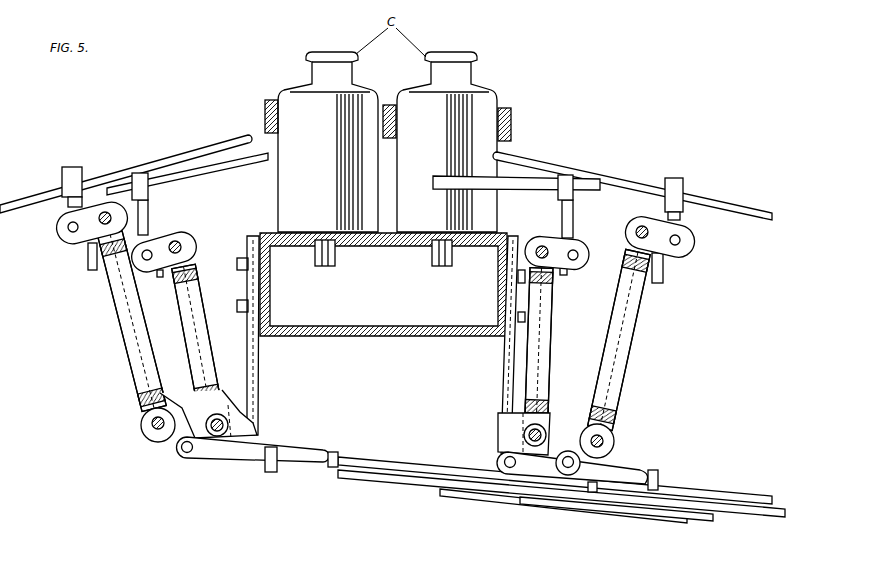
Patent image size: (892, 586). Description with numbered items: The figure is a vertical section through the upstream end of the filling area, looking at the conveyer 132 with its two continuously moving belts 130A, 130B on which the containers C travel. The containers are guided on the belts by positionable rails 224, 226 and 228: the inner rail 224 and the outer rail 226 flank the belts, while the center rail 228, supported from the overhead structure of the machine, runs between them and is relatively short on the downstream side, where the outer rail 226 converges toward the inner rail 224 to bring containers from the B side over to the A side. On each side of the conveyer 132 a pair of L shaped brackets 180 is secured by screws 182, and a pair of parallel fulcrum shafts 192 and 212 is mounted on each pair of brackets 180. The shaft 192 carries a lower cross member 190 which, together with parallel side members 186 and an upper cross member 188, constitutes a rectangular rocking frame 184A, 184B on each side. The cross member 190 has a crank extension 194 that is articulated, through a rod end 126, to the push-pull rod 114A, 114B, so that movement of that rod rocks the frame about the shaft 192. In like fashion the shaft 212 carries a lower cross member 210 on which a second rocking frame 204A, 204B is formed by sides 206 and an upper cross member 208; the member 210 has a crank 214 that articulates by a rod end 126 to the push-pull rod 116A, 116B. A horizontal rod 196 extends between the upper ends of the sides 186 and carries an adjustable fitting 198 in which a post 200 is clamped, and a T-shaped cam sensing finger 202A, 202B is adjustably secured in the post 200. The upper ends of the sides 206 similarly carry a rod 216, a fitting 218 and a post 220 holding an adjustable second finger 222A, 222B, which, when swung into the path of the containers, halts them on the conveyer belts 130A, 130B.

The push-pull rod 114A is at (557, 480).
The push-pull rod 114B is at (632, 521).
The push-pull rod 116A is at (757, 516).
The push-pull rod 116B is at (698, 522).
The rod end 126 is at (293, 450).
The conveyer belt 130A is at (440, 267).
The conveyer belt 130B is at (328, 266).
The conveyer 132 is at (348, 333).
The L shaped bracket 180 is at (259, 377).
The screw 182 is at (237, 303).
The rectangular rocking frame 184A is at (642, 327).
The rectangular rocking frame 184B is at (122, 339).
The side member 186 is at (125, 362).
The upper cross member 188 is at (118, 252).
The lower cross member 190 is at (142, 400).
The fulcrum shaft 192 is at (151, 426).
The crank extension 194 is at (166, 446).
The horizontal rod 196 is at (104, 212).
The adjustable fitting 198 is at (65, 238).
The post 200 is at (62, 172).
The T-shaped cam sensing finger 202A is at (603, 172).
The T-shaped cam sensing finger 202B is at (173, 157).
The rocking frame 204A is at (558, 347).
The rocking frame 204B is at (201, 272).
The side 206 is at (208, 345).
The upper cross member 208 is at (180, 288).
The lower cross member 210 is at (202, 388).
The fulcrum shaft 212 is at (218, 436).
The crank 214 is at (241, 427).
The rod 216 is at (178, 242).
The fitting 218 is at (161, 236).
The post 220 is at (150, 202).
The second finger 222A is at (524, 176).
The second finger 222B is at (244, 172).
The inner rail 224 is at (512, 116).
The outer rail 226 is at (265, 102).
The center rail 228 is at (389, 104).